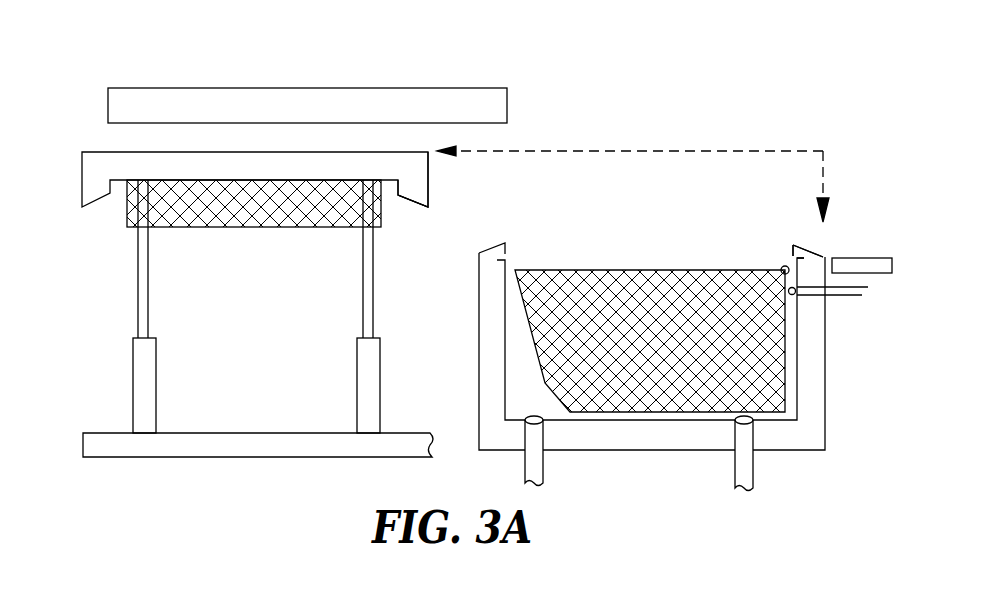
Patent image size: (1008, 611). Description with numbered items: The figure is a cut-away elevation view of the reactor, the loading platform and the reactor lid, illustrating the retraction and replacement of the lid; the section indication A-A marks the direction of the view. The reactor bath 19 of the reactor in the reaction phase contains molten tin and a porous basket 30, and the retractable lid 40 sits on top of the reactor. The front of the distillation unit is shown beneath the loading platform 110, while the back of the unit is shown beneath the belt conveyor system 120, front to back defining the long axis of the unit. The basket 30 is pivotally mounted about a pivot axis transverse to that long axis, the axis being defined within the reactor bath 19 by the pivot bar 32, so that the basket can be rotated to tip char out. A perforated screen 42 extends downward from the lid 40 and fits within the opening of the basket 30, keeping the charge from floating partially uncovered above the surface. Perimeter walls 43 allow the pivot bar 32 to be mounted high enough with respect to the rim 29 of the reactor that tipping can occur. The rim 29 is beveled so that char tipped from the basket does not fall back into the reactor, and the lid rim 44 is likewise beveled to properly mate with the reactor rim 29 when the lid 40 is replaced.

The reactor bath 19 is at (478, 322).
The rim 29 is at (810, 250).
The porous basket 30 is at (592, 270).
The pivot bar 32 is at (784, 266).
The retractable lid 40 is at (92, 152).
The perforated screen 42 is at (270, 228).
The perimeter walls 43 is at (430, 178).
The lid rim 44 is at (412, 198).
The loading platform 110 is at (200, 88).
The belt conveyor system 120 is at (860, 258).
The section line A-A is at (650, 152).